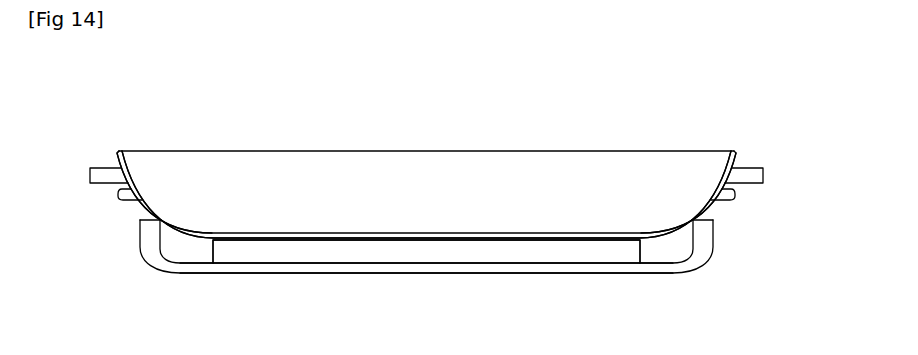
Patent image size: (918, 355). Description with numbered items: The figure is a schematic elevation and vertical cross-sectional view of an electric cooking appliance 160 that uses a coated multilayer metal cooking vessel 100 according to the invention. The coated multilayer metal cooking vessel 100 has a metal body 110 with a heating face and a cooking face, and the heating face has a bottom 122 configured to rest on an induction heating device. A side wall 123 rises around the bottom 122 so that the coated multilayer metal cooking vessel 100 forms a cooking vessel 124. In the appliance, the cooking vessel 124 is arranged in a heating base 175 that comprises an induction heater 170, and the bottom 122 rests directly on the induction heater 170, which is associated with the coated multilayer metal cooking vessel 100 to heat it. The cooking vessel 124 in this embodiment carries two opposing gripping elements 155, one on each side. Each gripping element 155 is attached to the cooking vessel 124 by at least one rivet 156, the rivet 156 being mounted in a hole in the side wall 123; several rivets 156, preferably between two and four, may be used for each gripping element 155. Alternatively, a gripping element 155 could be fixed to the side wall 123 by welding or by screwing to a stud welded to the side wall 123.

The coated multilayer metal cooking vessel 100 is at (138, 208).
The metal body 110 is at (665, 237).
The bottom 122 is at (426, 242).
The side wall 123 is at (708, 203).
The cooking vessel 124 is at (380, 168).
The gripping element 155 is at (102, 168).
The rivet 156 is at (121, 197).
The electric cooking appliance 160 is at (553, 142).
The induction heater 170 is at (513, 252).
The heating base 175 is at (352, 268).